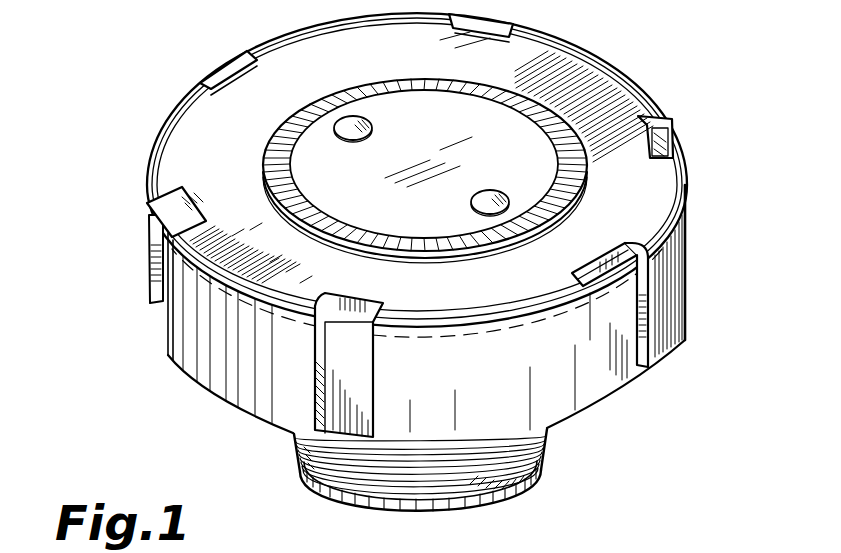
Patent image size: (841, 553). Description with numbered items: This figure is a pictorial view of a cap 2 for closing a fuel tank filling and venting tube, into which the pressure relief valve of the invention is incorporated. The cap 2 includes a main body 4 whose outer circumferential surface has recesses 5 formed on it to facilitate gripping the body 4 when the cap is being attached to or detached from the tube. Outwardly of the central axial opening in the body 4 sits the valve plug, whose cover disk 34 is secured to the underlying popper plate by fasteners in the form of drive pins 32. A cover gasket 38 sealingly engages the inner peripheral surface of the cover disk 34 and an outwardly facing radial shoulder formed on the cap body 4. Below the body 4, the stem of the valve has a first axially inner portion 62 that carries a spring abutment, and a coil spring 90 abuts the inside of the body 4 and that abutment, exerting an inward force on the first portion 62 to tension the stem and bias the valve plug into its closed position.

The cap 2 is at (103, 222).
The main body 4 is at (222, 388).
The recesses 5 is at (618, 325).
The drive pins 32 is at (471, 202).
The cover disk 34 is at (514, 136).
The cover gasket 38 is at (647, 105).
The first axially inner portion of the stem 62 is at (512, 491).
The coil spring 90 is at (548, 440).